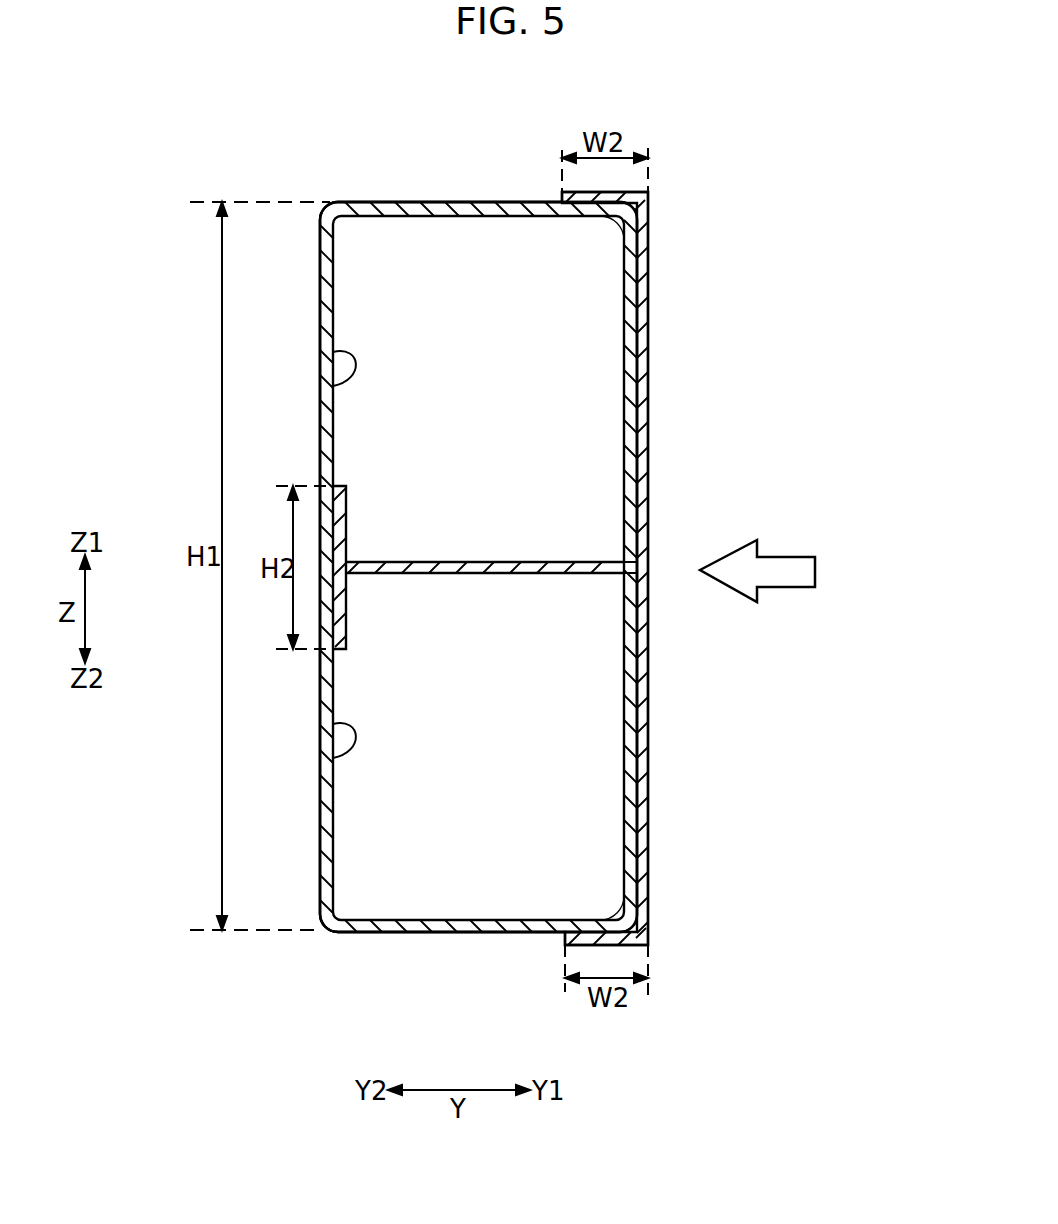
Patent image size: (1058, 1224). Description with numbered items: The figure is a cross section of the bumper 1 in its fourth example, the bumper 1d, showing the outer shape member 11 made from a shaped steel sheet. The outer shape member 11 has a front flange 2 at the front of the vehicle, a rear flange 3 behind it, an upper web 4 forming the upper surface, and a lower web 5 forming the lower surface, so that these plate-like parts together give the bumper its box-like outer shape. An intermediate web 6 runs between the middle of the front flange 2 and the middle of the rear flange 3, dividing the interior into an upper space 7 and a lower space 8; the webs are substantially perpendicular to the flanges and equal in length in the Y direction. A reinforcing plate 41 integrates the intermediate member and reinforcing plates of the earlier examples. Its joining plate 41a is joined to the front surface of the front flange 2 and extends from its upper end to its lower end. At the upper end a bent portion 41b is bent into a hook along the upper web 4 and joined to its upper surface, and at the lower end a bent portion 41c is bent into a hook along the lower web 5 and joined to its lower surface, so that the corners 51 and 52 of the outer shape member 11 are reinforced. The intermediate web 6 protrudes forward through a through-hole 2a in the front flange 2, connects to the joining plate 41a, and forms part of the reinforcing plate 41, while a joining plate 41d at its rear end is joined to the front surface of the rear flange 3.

The bumper 1 is at (680, 145).
The bumper of the fourth example 1d is at (478, 567).
The outer shape member 11 is at (413, 200).
The front flange 2 is at (646, 304).
The through-hole 2a is at (625, 574).
The rear flange 3 is at (320, 313).
The upper web 4 is at (462, 217).
The lower web 5 is at (458, 920).
The intermediate web 6 is at (500, 562).
The upper space 7 is at (338, 382).
The lower space 8 is at (336, 757).
The corner 51 is at (600, 230).
The corner 52 is at (600, 892).
The reinforcing plate 41 is at (656, 253).
The joining plate 41a is at (648, 378).
The bent portion 41b is at (648, 203).
The bent portion 41c is at (648, 945).
The joining plate 41d is at (340, 520).